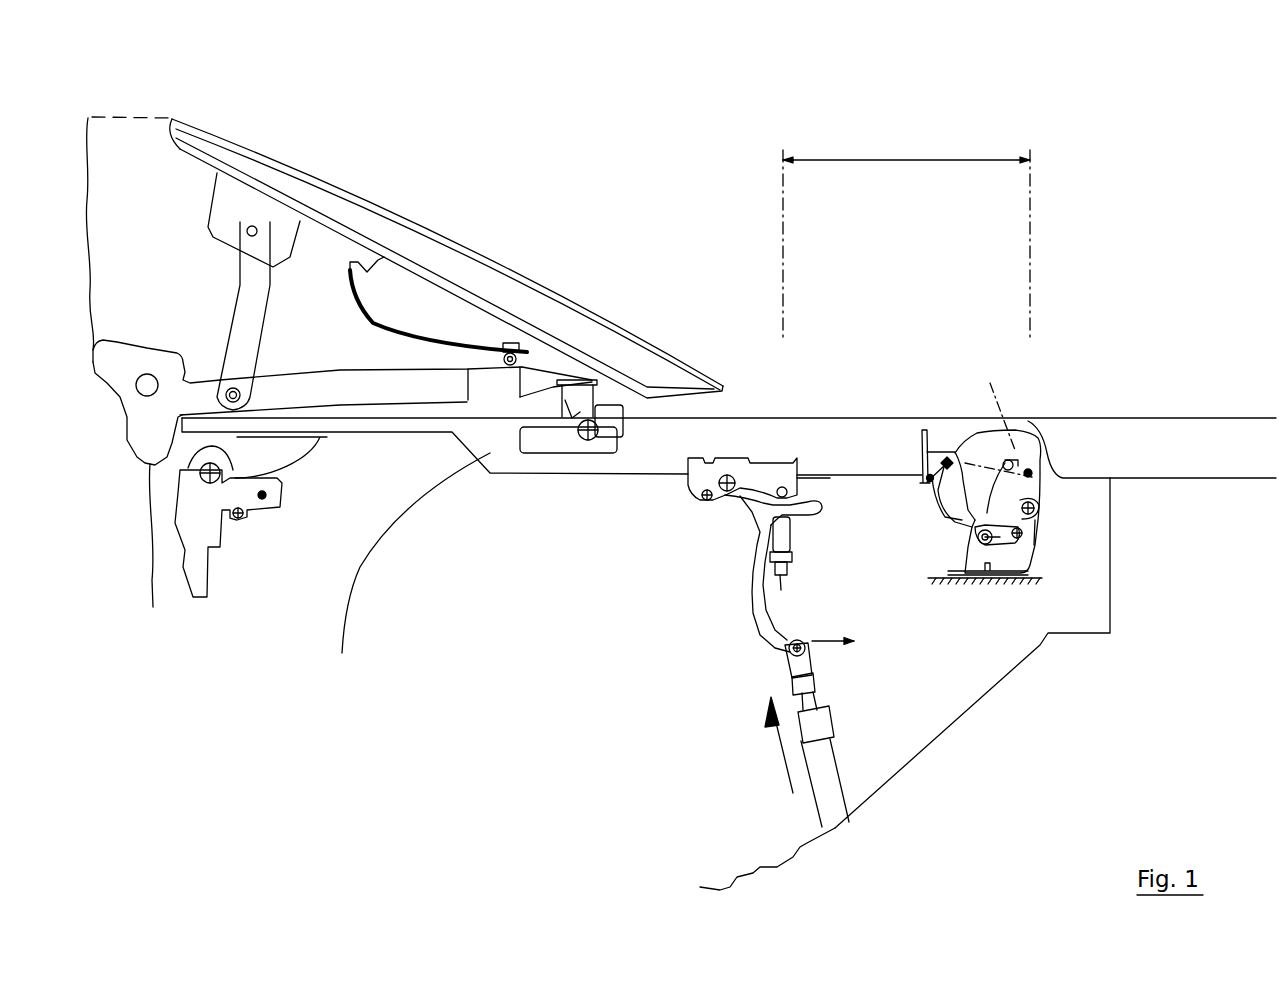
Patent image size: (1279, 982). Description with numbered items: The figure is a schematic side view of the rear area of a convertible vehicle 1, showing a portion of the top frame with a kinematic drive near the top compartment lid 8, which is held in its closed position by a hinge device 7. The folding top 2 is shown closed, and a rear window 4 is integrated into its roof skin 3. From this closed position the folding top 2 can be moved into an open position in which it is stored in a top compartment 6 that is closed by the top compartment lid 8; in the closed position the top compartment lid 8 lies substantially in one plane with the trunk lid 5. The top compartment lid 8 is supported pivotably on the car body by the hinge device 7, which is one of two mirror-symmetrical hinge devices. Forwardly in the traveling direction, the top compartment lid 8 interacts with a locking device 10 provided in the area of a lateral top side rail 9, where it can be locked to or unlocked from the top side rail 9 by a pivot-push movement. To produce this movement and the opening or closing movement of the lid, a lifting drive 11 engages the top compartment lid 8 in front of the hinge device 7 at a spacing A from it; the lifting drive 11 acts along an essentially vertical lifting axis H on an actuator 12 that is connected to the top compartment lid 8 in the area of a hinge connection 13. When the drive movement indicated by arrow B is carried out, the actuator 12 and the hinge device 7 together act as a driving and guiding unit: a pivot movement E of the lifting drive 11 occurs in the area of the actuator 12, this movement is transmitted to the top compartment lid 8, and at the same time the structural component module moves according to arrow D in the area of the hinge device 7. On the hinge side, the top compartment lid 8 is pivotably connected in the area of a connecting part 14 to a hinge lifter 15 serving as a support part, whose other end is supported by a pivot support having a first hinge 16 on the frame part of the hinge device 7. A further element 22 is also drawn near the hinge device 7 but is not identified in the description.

The convertible vehicle 1 is at (353, 126).
The folding top 2 is at (157, 112).
The roof skin 3 is at (173, 118).
The rear window 4 is at (410, 247).
The trunk lid 5 is at (1128, 420).
The top compartment 6 is at (975, 705).
The hinge device 7 is at (1012, 557).
The top compartment lid 8 is at (833, 416).
The top side rail 9 is at (412, 385).
The locking device 10 is at (490, 453).
The lifting drive 11 is at (680, 667).
The actuator 12 is at (748, 598).
The hinge connection 13 is at (783, 661).
The connecting part 14 is at (927, 440).
The hinge lifter 15 is at (977, 522).
The first hinge 16 is at (1031, 474).
The stop 22 is at (1013, 460).
The spacing A is at (892, 162).
The drive movement B is at (783, 758).
The movement of the structural component module D is at (962, 422).
The pivot movement E is at (827, 640).
The lifting axis H is at (833, 801).